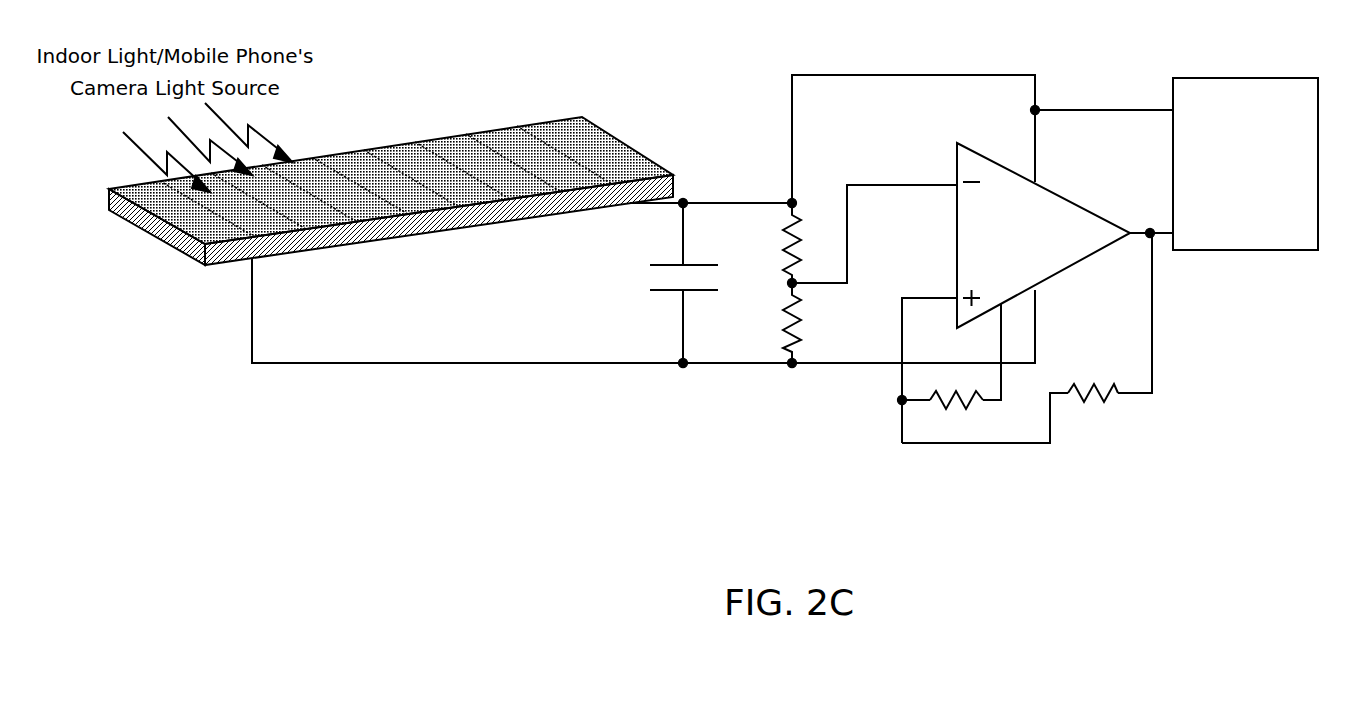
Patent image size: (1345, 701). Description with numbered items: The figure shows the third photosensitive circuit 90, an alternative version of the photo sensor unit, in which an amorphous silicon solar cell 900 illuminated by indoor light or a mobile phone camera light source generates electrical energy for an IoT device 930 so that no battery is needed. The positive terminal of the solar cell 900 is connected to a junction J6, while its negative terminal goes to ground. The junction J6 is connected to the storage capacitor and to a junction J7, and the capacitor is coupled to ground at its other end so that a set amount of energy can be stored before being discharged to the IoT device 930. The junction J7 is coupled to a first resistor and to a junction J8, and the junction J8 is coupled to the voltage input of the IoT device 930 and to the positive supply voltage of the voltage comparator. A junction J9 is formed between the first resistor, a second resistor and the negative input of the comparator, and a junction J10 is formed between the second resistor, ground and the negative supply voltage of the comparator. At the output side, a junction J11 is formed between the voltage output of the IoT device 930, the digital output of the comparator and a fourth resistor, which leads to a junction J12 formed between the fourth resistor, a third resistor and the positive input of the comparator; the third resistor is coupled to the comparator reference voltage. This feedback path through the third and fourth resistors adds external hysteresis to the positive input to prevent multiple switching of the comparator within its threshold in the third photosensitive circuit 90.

The amorphous silicon solar cell 900 is at (563, 118).
The IoT device 930 is at (1253, 78).
The third photosensitive circuit 90 is at (1310, 509).
The junction J6 is at (681, 362).
The junction J7 is at (685, 196).
The junction J8 is at (796, 196).
The junction J9 is at (788, 284).
The junction J10 is at (790, 370).
The junction J11 is at (1147, 230).
The junction J12 is at (900, 405).